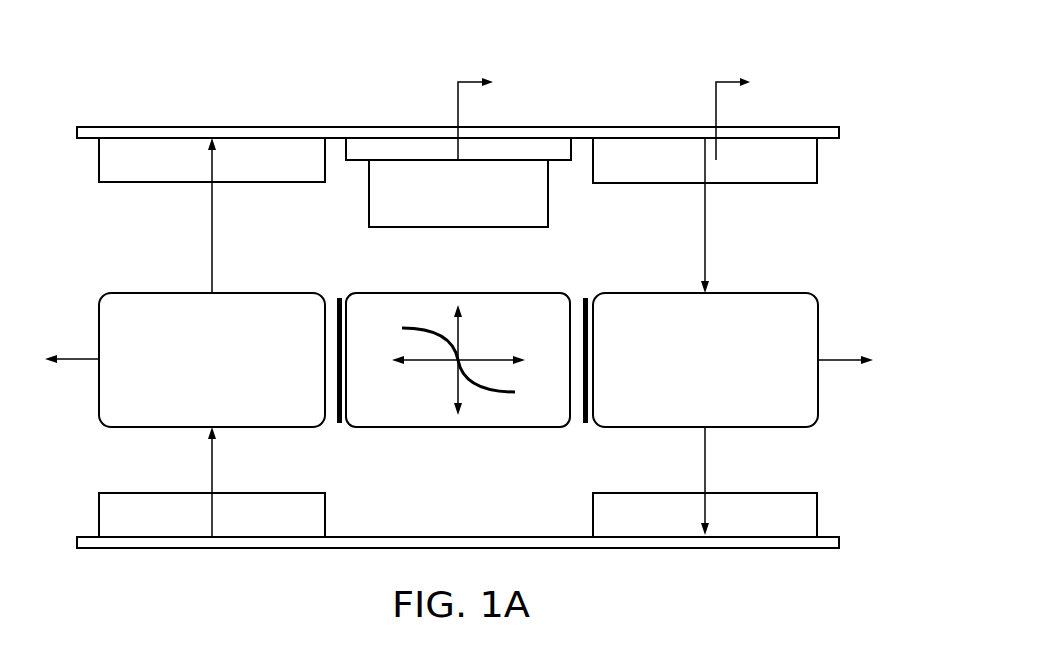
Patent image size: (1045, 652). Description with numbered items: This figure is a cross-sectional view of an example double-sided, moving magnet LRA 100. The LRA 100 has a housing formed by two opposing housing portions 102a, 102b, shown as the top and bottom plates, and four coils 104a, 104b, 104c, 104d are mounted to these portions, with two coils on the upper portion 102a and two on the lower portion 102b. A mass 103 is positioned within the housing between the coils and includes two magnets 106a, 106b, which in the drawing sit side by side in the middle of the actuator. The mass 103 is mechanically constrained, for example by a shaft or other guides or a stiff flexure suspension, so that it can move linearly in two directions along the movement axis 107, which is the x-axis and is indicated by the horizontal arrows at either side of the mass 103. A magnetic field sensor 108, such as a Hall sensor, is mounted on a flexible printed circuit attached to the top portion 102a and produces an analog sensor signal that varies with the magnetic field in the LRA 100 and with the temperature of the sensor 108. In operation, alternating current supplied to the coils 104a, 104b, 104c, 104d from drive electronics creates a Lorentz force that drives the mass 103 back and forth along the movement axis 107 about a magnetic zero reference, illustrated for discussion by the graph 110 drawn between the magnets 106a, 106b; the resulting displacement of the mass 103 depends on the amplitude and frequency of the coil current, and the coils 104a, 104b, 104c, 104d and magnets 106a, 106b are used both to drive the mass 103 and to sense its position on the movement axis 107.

The double-sided, moving magnet LRA 100 is at (270, 50).
The housing portion 102a is at (392, 127).
The housing portion 102b is at (347, 548).
The mass 103 is at (78, 286).
The coil 104a is at (99, 160).
The coil 104b is at (817, 158).
The coil 104c is at (99, 517).
The coil 104d is at (817, 517).
The magnet 106a is at (238, 393).
The magnet 106b is at (733, 393).
The movement axis 107 is at (77, 363).
The magnetic field sensor 108 is at (437, 227).
The graph 110 is at (425, 408).